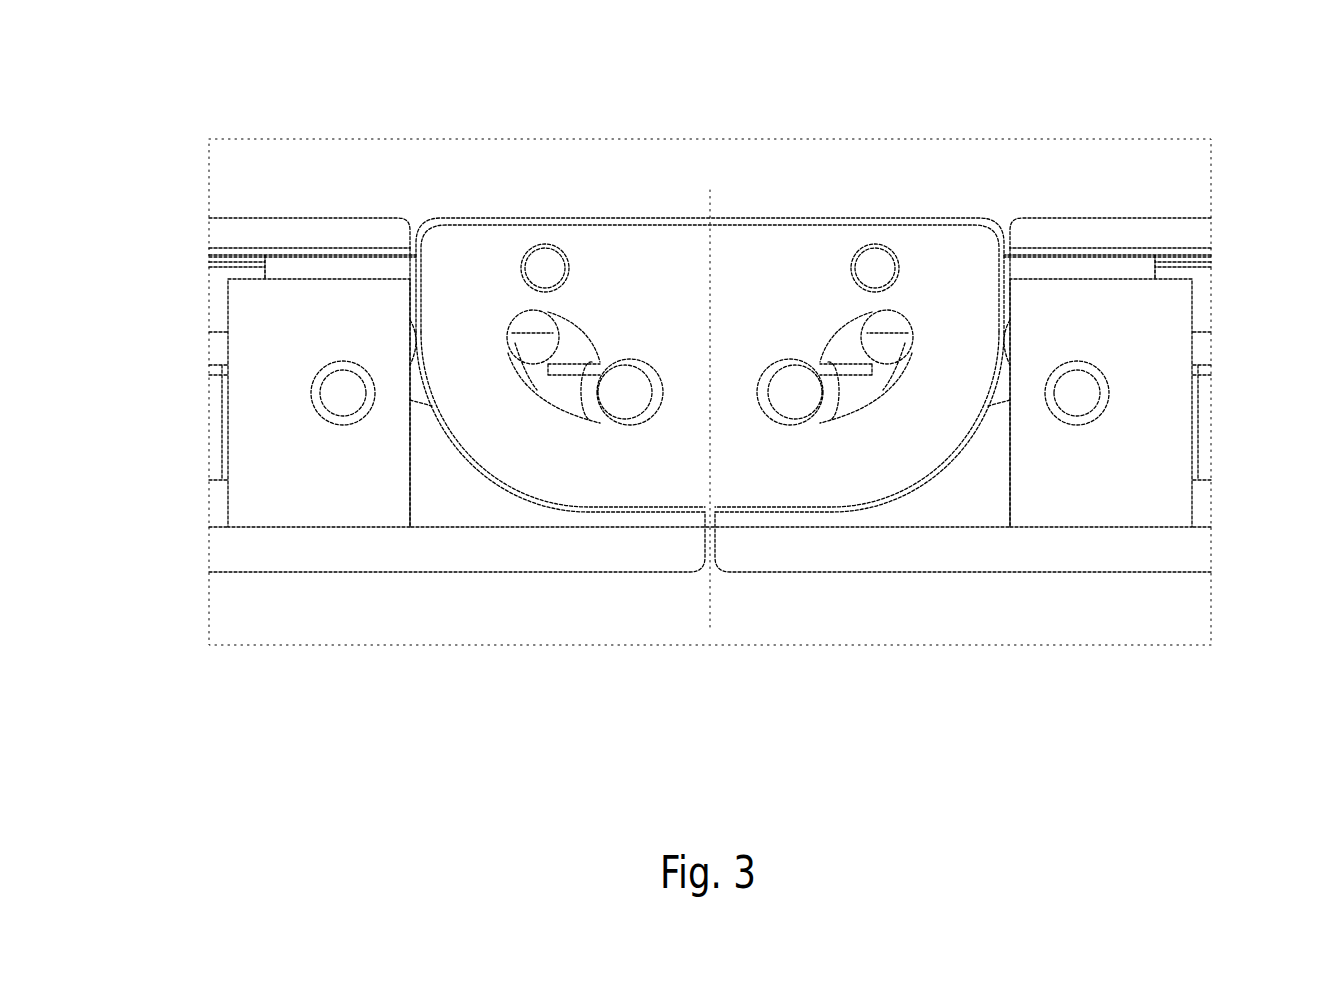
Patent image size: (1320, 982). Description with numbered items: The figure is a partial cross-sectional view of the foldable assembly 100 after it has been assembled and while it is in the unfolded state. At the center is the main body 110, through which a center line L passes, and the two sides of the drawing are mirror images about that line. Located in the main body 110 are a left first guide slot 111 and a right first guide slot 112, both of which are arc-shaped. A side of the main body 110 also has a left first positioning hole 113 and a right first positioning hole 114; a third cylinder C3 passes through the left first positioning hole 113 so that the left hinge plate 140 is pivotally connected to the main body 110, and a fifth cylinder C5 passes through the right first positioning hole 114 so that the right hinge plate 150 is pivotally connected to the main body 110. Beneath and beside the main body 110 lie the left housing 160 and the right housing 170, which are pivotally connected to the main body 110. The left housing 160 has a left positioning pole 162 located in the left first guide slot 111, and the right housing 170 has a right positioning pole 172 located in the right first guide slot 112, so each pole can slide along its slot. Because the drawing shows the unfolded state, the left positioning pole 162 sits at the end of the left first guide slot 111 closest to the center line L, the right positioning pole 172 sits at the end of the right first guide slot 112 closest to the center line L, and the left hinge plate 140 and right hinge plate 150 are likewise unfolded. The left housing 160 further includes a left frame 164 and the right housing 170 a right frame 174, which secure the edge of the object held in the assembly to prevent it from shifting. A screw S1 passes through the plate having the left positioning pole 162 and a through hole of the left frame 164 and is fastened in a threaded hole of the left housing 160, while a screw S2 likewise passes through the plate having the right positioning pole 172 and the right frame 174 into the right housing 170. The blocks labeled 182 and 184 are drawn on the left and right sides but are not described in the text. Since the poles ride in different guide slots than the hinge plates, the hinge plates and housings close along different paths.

The foldable assembly 100 is at (86, 61).
The main body 110 is at (740, 245).
The center line L is at (712, 212).
The left first guide slot 111 is at (577, 388).
The right first guide slot 112 is at (843, 388).
The left first positioning hole 113 is at (540, 265).
The right first positioning hole 114 is at (880, 265).
The third cylinder C3 is at (548, 262).
The fifth cylinder C5 is at (872, 260).
The left hinge plate 140 is at (266, 267).
The right hinge plate 150 is at (1154, 267).
The left housing 160 is at (328, 565).
The left positioning pole 162 is at (620, 400).
The left frame 164 is at (213, 228).
The right housing 170 is at (1098, 565).
The right positioning pole 172 is at (788, 407).
The right frame 174 is at (1207, 228).
The first block 182 is at (222, 305).
The second block 184 is at (1198, 305).
The screw S1 is at (328, 387).
The screw S2 is at (1092, 387).